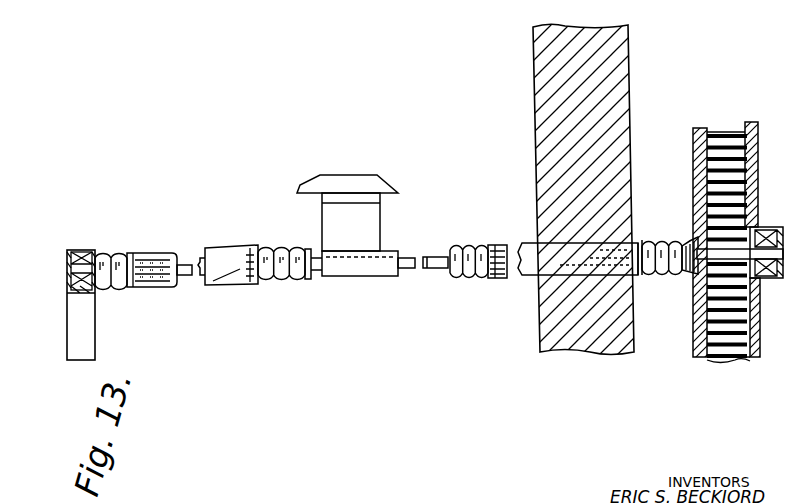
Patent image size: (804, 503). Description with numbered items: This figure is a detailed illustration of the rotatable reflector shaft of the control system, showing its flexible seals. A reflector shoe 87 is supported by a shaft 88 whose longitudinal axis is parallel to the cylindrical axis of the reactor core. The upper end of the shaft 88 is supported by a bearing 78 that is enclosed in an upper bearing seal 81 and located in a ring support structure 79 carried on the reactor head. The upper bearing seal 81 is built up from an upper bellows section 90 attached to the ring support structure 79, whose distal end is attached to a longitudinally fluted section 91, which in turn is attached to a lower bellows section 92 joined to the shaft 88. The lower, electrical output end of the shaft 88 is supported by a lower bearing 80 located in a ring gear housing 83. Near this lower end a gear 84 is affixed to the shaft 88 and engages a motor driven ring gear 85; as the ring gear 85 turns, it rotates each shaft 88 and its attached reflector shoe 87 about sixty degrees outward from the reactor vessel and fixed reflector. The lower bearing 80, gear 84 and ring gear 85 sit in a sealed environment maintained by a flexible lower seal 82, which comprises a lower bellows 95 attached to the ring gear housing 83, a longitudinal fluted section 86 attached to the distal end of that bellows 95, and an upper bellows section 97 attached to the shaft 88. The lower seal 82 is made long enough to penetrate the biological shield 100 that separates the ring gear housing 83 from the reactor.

The bearing 78 is at (82, 252).
The ring support structure 79 is at (97, 356).
The lower bearing 80 is at (760, 280).
The upper bearing seal 81 is at (221, 243).
The lower seal 82 is at (523, 233).
The ring gear housing 83 is at (762, 345).
The gear 84 is at (705, 228).
The ring gear 85 is at (700, 127).
The longitudinal fluted section 86 is at (500, 280).
The reflector shoe 87 is at (375, 190).
The shaft 88 is at (189, 277).
The upper bellows section 90 is at (118, 254).
The longitudinally fluted section 91 is at (141, 287).
The lower bellows section 92 is at (270, 278).
The lower bellows 95 is at (678, 276).
The upper bellows section 97 is at (465, 280).
The biological shield 100 is at (540, 170).